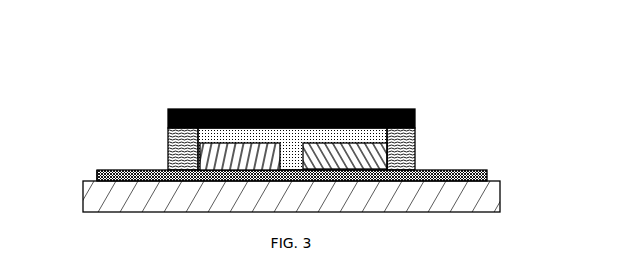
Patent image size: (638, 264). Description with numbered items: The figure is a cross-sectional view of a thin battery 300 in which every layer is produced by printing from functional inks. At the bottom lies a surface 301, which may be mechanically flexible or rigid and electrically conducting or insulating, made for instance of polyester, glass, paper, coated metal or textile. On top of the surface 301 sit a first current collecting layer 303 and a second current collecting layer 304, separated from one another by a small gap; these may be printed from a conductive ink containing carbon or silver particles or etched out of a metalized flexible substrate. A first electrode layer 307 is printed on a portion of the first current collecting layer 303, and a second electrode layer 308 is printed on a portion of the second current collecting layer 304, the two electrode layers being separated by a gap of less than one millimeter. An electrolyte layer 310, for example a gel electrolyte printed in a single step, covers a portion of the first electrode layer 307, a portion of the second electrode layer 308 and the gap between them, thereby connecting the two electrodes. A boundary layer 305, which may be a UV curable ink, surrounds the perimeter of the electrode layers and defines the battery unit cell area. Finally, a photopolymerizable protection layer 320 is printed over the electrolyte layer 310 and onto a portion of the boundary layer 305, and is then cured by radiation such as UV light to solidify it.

The thin battery 300 is at (182, 62).
The surface 301 is at (480, 198).
The first current collecting layer 303 is at (486, 172).
The second current collecting layer 304 is at (100, 172).
The boundary layer 305 is at (178, 145).
The first electrode layer 307 is at (352, 157).
The second electrode layer 308 is at (230, 158).
The electrolyte layer 310 is at (292, 140).
The photopolymerizable protection layer 320 is at (410, 113).